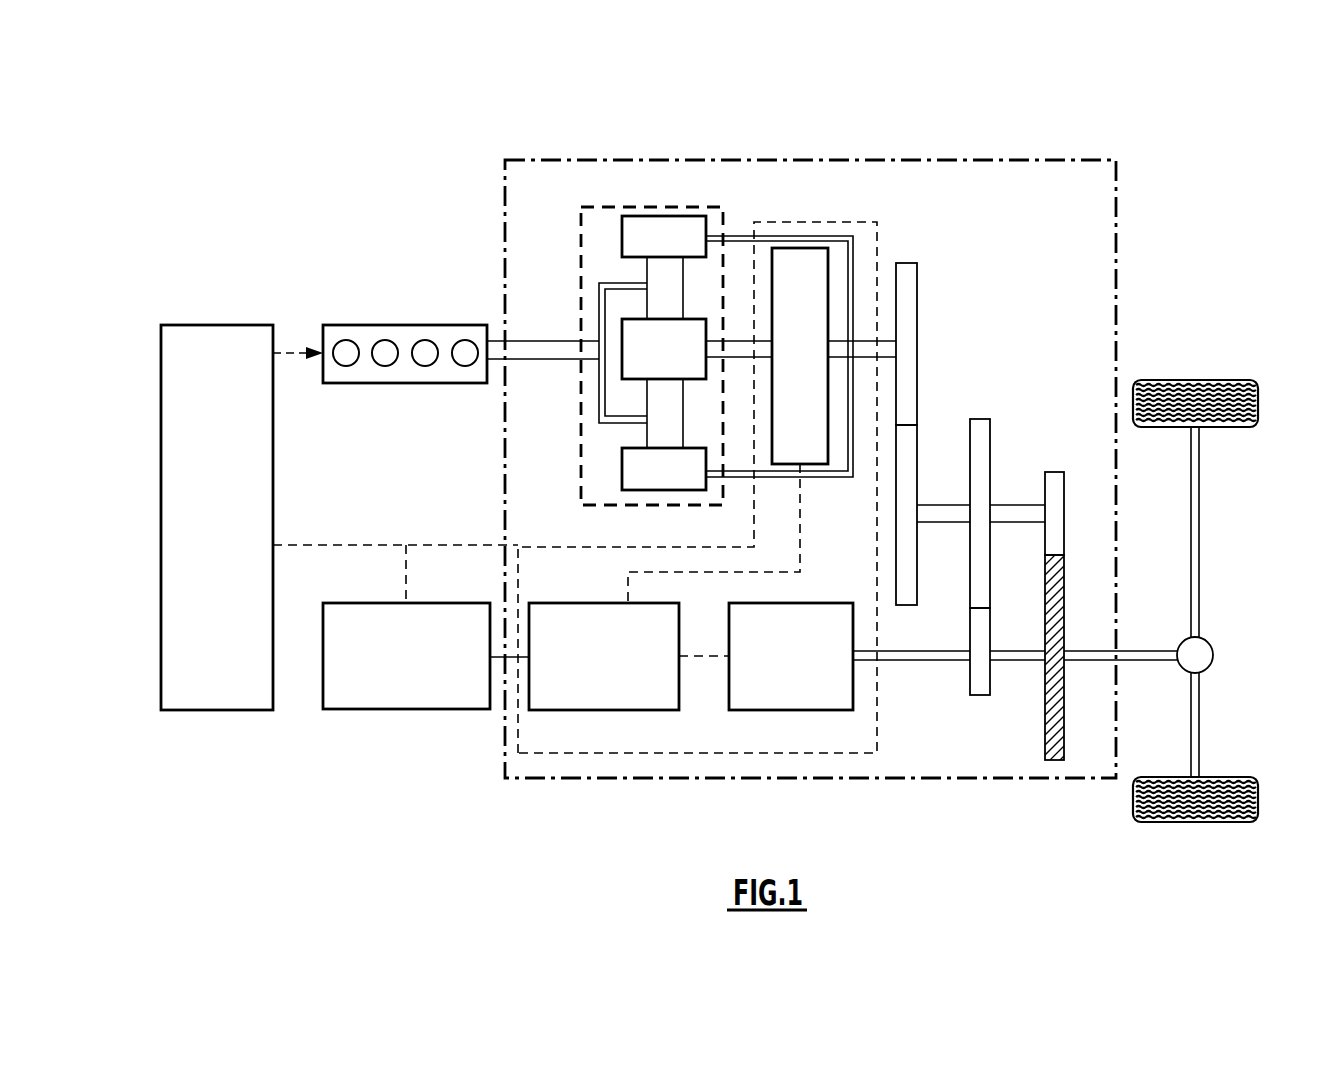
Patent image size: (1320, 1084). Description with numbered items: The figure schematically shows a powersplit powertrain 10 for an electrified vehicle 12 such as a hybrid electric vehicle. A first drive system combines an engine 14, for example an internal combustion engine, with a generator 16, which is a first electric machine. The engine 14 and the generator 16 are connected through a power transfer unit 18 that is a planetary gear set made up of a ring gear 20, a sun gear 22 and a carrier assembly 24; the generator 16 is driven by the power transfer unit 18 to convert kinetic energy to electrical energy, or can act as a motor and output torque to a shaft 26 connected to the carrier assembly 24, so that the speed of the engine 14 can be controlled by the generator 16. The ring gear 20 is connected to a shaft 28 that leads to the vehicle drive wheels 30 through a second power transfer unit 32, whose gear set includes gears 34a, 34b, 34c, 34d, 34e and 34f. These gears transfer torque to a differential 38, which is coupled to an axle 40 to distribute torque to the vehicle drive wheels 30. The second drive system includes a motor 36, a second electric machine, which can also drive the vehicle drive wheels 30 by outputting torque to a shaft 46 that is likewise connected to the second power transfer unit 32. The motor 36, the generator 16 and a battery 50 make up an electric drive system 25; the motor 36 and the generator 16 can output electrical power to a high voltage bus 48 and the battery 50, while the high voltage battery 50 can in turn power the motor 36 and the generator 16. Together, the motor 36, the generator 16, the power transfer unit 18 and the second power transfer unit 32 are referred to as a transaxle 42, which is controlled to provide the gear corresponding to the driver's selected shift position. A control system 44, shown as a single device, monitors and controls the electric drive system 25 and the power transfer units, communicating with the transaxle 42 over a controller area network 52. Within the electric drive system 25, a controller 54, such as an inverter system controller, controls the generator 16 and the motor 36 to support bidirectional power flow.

The powertrain 10 is at (428, 226).
The electrified vehicle 12 is at (262, 199).
The engine 14 is at (365, 383).
The generator 16 is at (812, 248).
The power transfer unit 18 is at (581, 293).
The ring gear 20 is at (622, 237).
The sun gear 22 is at (622, 336).
The carrier assembly 24 is at (599, 409).
The electric drive system 25 is at (612, 753).
The shaft 26 is at (745, 352).
The shaft 28 is at (886, 340).
The vehicle drive wheels 30 is at (1210, 362).
The second power transfer unit 32 is at (985, 375).
The gear 34a is at (917, 298).
The gear 34b is at (904, 605).
The gear 34c is at (990, 438).
The gear 34d is at (980, 695).
The gear 34e is at (1048, 472).
The gear 34f is at (1053, 760).
The motor 36 is at (800, 710).
The differential 38 is at (1200, 652).
The axle 40 is at (1140, 650).
The transaxle 42 is at (993, 778).
The control system 44 is at (210, 325).
The shaft 46 is at (920, 660).
The high voltage bus 48 is at (497, 657).
The battery 50 is at (405, 709).
The controller area network 52 is at (398, 532).
The controller 54 is at (600, 603).